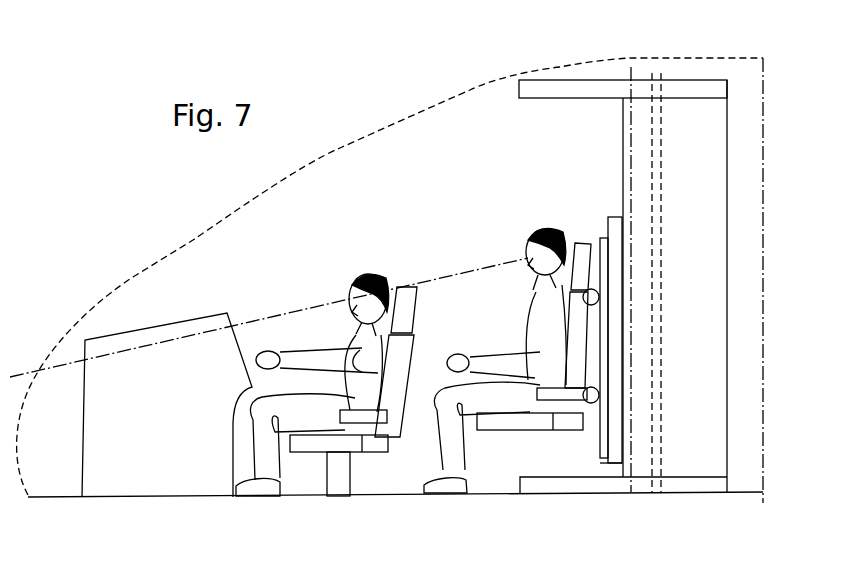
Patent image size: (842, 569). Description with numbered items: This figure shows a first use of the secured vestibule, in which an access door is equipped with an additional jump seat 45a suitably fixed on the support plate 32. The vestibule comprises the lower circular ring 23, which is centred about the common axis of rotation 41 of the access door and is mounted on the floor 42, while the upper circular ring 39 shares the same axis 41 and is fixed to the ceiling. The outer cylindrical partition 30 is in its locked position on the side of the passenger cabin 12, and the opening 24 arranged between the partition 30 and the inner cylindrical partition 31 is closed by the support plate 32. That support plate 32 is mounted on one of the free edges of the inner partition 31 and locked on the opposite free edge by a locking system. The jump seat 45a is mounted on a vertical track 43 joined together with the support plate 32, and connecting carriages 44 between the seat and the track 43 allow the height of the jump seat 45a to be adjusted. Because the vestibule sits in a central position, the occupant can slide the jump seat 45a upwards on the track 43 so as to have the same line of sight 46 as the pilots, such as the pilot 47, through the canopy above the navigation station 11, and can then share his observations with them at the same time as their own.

The navigation station 11 is at (181, 357).
The passenger cabin 12 is at (756, 273).
The lower circular ring 23 is at (710, 483).
The opening 24 is at (619, 141).
The outer cylindrical partition 30 is at (727, 350).
The inner cylindrical partition 31 is at (623, 183).
The support plate 32 is at (608, 219).
The upper circular ring 39 is at (727, 88).
The common axis of rotation 41 is at (631, 72).
The floor 42 is at (488, 493).
The vertical track 43 is at (605, 463).
The connecting carriages 44 is at (600, 357).
The jump seat 45a is at (503, 418).
The line of sight 46 is at (457, 272).
The pilot 47 is at (367, 273).